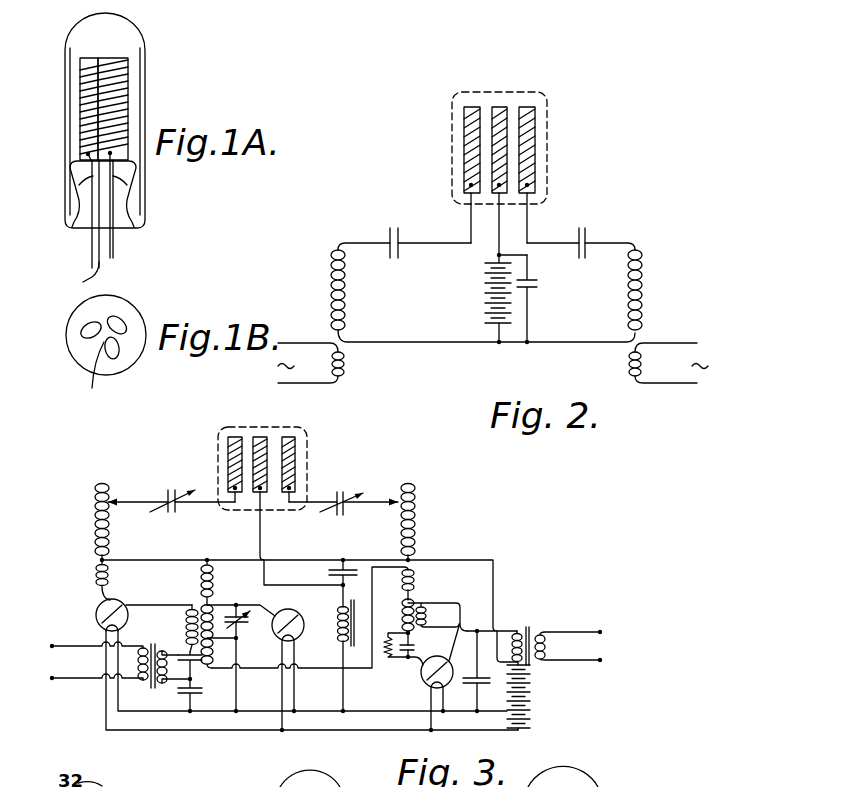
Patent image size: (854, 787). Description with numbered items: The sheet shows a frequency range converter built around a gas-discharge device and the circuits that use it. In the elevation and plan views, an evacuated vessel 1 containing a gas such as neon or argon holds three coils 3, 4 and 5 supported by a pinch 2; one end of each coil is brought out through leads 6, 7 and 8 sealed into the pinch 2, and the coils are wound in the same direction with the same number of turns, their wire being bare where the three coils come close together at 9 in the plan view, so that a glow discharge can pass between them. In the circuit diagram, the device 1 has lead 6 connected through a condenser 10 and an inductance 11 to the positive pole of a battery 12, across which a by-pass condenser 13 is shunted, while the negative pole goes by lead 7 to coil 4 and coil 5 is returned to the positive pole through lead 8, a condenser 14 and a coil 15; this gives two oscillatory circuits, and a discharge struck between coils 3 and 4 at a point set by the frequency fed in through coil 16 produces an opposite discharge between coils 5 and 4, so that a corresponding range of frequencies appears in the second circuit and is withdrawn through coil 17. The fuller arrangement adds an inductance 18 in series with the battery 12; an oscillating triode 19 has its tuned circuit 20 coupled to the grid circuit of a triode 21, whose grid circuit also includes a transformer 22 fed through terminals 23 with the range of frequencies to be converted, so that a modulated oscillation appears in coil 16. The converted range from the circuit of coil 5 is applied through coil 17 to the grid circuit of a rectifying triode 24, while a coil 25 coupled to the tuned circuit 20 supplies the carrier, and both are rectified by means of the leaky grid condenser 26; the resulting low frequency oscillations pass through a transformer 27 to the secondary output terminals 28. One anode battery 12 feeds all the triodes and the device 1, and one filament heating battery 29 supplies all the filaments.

In FIG. 1A, the evacuated vessel 1 is at (145, 66).
In FIG. 1B, the evacuated vessel 1 is at (68, 319).
In FIG. 2, the evacuated vessel 1 is at (538, 154).
In FIG. 3, the evacuated vessel 1 is at (300, 458).
In FIG. 1A, the pinch 2 is at (76, 179).
In FIG. 1A, the coil 3 is at (85, 58).
In FIG. 1B, the coil 3 is at (95, 313).
In FIG. 2, the coil 3 is at (474, 107).
In FIG. 3, the coil 3 is at (229, 441).
In FIG. 1A, the coil 4 is at (113, 58).
In FIG. 1B, the coil 4 is at (122, 352).
In FIG. 2, the coil 4 is at (499, 107).
In FIG. 3, the coil 4 is at (260, 437).
In FIG. 1B, the coil 5 is at (123, 318).
In FIG. 2, the coil 5 is at (528, 107).
In FIG. 3, the coil 5 is at (289, 437).
In FIG. 1A, the lead 6 is at (92, 249).
In FIG. 2, the lead 6 is at (469, 225).
In FIG. 1A, the lead 7 is at (80, 279).
In FIG. 2, the lead 7 is at (493, 230).
In FIG. 3, the lead 7 is at (301, 538).
In FIG. 1A, the lead 8 is at (113, 261).
In FIG. 2, the lead 8 is at (533, 225).
In FIG. 1B, the points where the three coils are close together 9 is at (94, 374).
In FIG. 2, the condenser 10 is at (398, 230).
In FIG. 3, the condenser 10 is at (171, 490).
In FIG. 2, the inductance 11 is at (331, 292).
In FIG. 3, the inductance 11 is at (96, 522).
In FIG. 2, the battery 12 is at (483, 293).
In FIG. 3, the battery 12 is at (532, 683).
In FIG. 2, the by-pass condenser 13 is at (540, 283).
In FIG. 3, the by-pass condenser 13 is at (336, 566).
In FIG. 2, the condenser 14 is at (590, 234).
In FIG. 3, the condenser 14 is at (345, 490).
In FIG. 2, the coil 15 is at (642, 296).
In FIG. 3, the coil 15 is at (416, 525).
In FIG. 2, the coil 16 is at (346, 366).
In FIG. 3, the coil 16 is at (97, 583).
In FIG. 2, the coil 17 is at (625, 363).
In FIG. 3, the coil 17 is at (415, 577).
In FIG. 3, the inductance 18 is at (338, 613).
In FIG. 3, the oscillating triode 19 is at (298, 640).
In FIG. 3, the tuned circuit 20 is at (220, 617).
In FIG. 3, the triode 21 is at (98, 611).
In FIG. 3, the transformer 22 is at (141, 681).
In FIG. 3, the terminals 23 is at (89, 661).
In FIG. 3, the rectifying triode 24 is at (447, 686).
In FIG. 3, the coil 25 is at (212, 668).
In FIG. 3, the leaky grid condenser 26 is at (395, 657).
In FIG. 3, the transformer 27 is at (535, 617).
In FIG. 3, the secondary output terminals 28 is at (608, 646).
In FIG. 3, the filament heating battery 29 is at (532, 720).